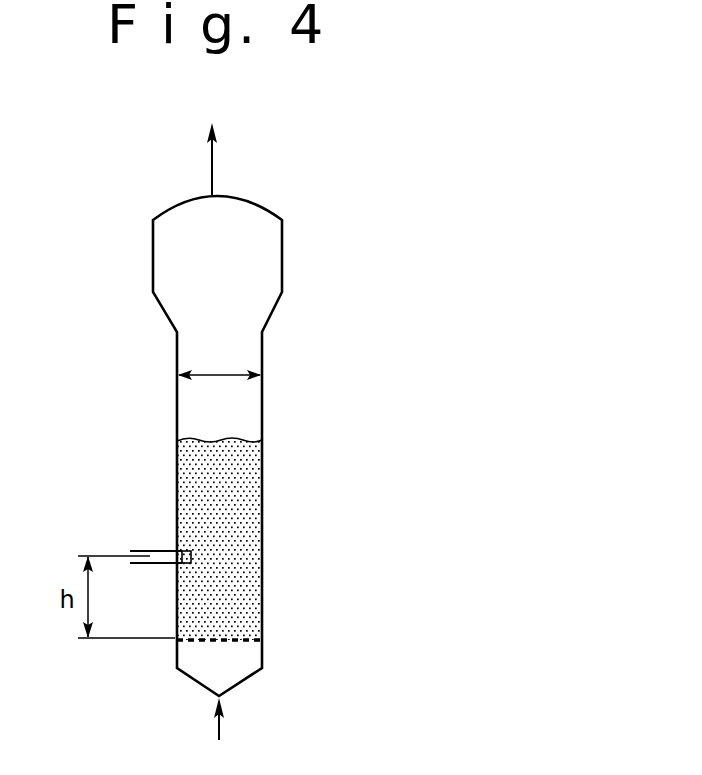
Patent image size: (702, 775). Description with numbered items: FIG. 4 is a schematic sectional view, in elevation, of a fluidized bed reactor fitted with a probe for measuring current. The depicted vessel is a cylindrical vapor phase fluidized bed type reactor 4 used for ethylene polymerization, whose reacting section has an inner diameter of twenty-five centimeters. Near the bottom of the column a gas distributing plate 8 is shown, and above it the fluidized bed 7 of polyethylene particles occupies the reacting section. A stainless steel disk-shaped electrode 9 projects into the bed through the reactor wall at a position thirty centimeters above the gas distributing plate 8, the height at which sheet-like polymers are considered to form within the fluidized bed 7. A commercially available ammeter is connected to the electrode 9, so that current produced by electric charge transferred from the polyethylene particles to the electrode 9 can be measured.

The vapor phase fluidized bed type reactor 4 is at (261, 505).
The fluidized bed 7 is at (242, 590).
The gas distributing plate 8 is at (238, 640).
The disk-shaped electrode 9 is at (177, 549).